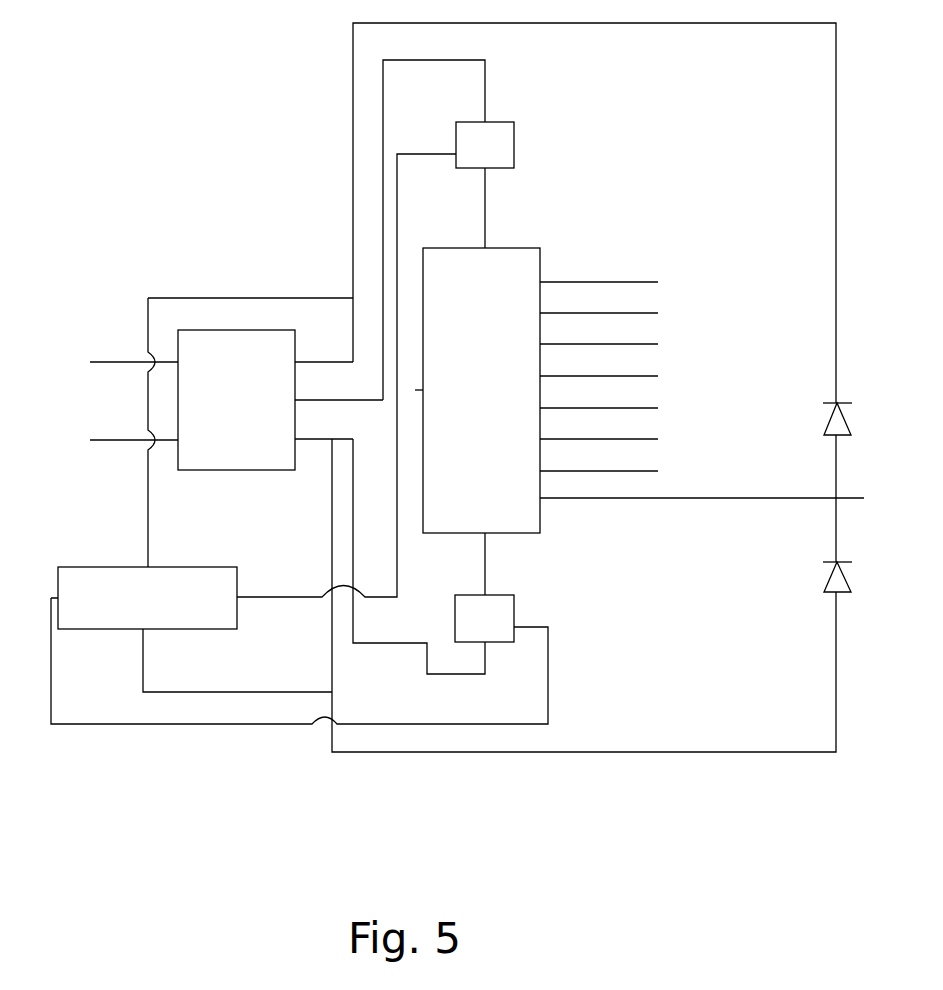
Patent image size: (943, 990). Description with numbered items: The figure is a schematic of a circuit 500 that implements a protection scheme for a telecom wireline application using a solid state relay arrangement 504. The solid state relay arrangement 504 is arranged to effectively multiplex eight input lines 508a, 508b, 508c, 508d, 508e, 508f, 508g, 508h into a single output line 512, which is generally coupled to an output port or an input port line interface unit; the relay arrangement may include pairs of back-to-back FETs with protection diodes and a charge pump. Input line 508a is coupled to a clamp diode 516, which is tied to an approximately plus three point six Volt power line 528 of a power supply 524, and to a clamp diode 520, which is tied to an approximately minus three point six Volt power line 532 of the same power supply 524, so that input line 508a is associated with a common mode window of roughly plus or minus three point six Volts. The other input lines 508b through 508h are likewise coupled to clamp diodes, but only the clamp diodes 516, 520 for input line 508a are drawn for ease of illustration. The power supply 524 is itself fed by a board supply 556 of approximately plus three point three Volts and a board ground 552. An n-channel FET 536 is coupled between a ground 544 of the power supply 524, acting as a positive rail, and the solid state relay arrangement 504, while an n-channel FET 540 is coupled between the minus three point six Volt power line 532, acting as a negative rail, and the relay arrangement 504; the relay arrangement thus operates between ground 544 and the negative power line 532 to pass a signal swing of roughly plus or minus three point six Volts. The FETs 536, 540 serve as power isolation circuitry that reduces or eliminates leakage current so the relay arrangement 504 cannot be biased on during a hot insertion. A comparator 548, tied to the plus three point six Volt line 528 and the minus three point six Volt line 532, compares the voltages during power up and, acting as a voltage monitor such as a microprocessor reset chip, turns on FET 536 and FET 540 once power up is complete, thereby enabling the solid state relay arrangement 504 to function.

The circuit 500 is at (158, 151).
The solid state relay arrangement 504 is at (525, 248).
The input line 508a is at (643, 500).
The input line 508b is at (648, 469).
The input line 508c is at (648, 437).
The input line 508d is at (648, 406).
The input line 508e is at (648, 374).
The input line 508f is at (648, 342).
The input line 508g is at (648, 311).
The input line 508h is at (648, 280).
The single output line 512 is at (416, 390).
The clamp diode 516 is at (823, 428).
The clamp diode 520 is at (823, 587).
The power supply 524 is at (203, 470).
The +3.6 Volt power line 528 is at (352, 317).
The -3.6 Volt power line 532 is at (315, 440).
The n-channel FET 536 is at (514, 154).
The n-channel FET 540 is at (514, 611).
The ground 544 is at (375, 396).
The comparator 548 is at (212, 629).
The board ground 552 is at (112, 442).
The board supply 556 is at (112, 364).